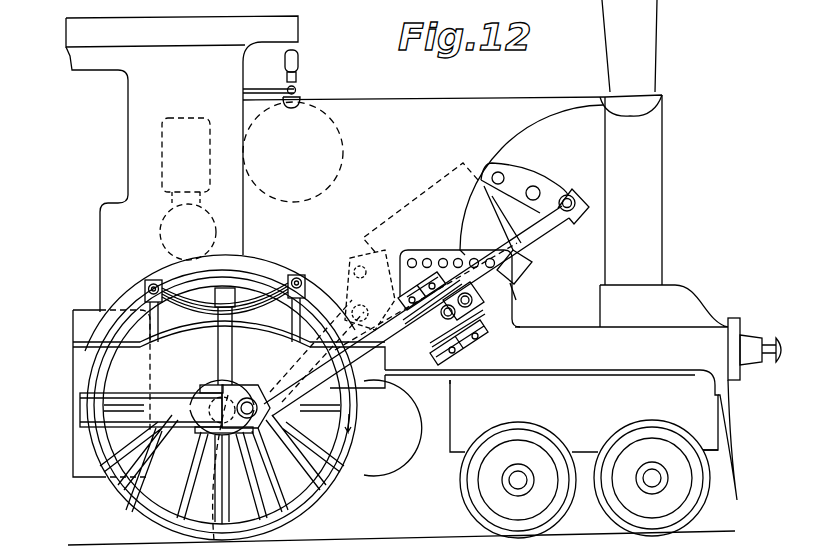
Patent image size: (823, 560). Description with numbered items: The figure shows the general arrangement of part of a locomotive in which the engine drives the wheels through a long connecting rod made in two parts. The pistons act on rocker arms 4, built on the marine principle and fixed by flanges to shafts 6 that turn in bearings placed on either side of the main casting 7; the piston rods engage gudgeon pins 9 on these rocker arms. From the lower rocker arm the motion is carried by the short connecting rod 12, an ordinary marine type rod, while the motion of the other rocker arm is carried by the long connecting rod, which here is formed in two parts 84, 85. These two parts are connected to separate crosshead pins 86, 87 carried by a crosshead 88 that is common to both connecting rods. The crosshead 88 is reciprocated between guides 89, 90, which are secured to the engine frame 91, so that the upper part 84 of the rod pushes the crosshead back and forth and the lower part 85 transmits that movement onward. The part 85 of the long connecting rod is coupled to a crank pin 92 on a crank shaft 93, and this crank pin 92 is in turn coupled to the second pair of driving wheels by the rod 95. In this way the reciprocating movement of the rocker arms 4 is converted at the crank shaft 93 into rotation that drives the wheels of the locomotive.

The rocker arm 4 is at (518, 170).
The shaft 6 is at (540, 192).
The main casting 7 is at (428, 200).
The gudgeon pin 9 is at (497, 171).
The short connecting rod 12 is at (325, 328).
The first part of long connecting rod 84 is at (535, 232).
The second part of long connecting rod 85 is at (280, 392).
The crosshead pin 86 is at (450, 322).
The crosshead pin 87 is at (488, 320).
The crosshead 88 is at (484, 290).
The guide 89 is at (428, 285).
The guide 90 is at (473, 355).
The engine frame 91 is at (549, 362).
The crank pin 92 is at (241, 400).
The crank shaft 93 is at (214, 540).
The rod 95 is at (157, 410).